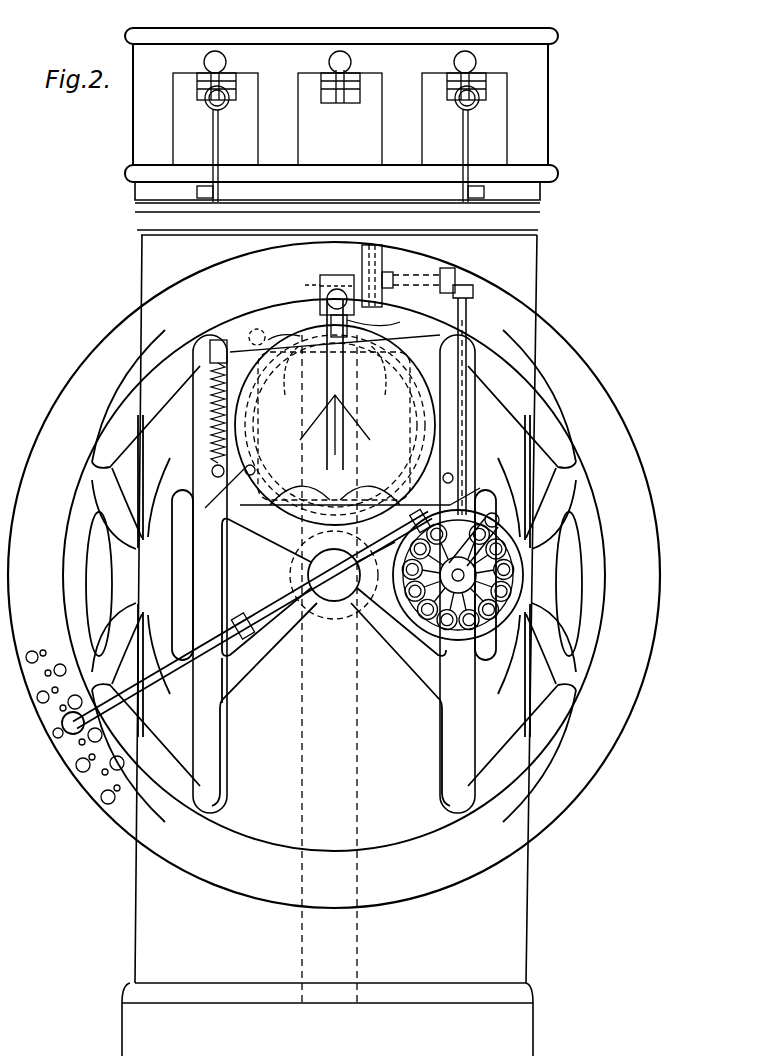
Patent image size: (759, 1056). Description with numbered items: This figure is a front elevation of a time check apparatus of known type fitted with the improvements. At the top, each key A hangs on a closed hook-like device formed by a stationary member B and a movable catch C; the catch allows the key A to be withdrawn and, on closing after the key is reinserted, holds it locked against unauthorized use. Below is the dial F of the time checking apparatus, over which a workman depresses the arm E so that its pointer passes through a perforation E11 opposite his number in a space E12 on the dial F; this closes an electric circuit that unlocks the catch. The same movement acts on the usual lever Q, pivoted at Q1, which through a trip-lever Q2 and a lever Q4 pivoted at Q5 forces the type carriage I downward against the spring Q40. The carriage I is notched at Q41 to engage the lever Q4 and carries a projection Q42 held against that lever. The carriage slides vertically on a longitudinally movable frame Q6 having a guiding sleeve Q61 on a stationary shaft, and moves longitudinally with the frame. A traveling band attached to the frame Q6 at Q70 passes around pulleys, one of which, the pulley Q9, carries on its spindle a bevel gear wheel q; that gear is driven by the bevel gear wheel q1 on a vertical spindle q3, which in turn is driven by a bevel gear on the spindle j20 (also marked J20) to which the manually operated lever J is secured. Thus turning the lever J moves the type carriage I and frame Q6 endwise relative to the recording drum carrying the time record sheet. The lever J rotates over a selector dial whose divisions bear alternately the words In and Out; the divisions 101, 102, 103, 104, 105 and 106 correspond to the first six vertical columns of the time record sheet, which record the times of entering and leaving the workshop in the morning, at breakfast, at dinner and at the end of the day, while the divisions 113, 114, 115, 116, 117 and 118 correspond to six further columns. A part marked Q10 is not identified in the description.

The key A is at (218, 149).
The stationary member B is at (228, 66).
The movable catch C is at (328, 103).
The dial F is at (127, 827).
The arm E is at (214, 667).
The perforation E11 is at (115, 787).
The space E12 is at (104, 805).
The lever Q is at (330, 432).
The trip-lever Q2 is at (328, 384).
The projection Q42 is at (372, 385).
The type carriage I is at (398, 388).
The longitudinally movable frame Q6 is at (340, 284).
The guiding sleeve Q61 is at (318, 283).
The pulley Q9 is at (398, 283).
The bevel gear wheel q is at (470, 288).
The bevel gear wheel q1 is at (475, 306).
The vertical spindle q3 is at (470, 425).
The connection of traveling band to frame Q70 is at (402, 323).
The link Q10 is at (401, 314).
The notch Q41 is at (470, 333).
The pivot Q5 is at (257, 329).
The lever Q4 is at (282, 338).
The spring Q40 is at (212, 420).
The pivot Q1 is at (224, 498).
The manually operated lever J is at (482, 571).
The spindle j20 is at (424, 510).
The pointer J20 is at (461, 527).
The division 101 is at (490, 540).
The division 102 is at (505, 552).
The division 103 is at (512, 569).
The division 104 is at (510, 589).
The division 105 is at (497, 606).
The division 106 is at (478, 622).
The division 113 is at (448, 630).
The division 114 is at (426, 620).
The division 115 is at (408, 600).
The division 116 is at (402, 580).
The division 117 is at (408, 560).
The division 118 is at (425, 545).